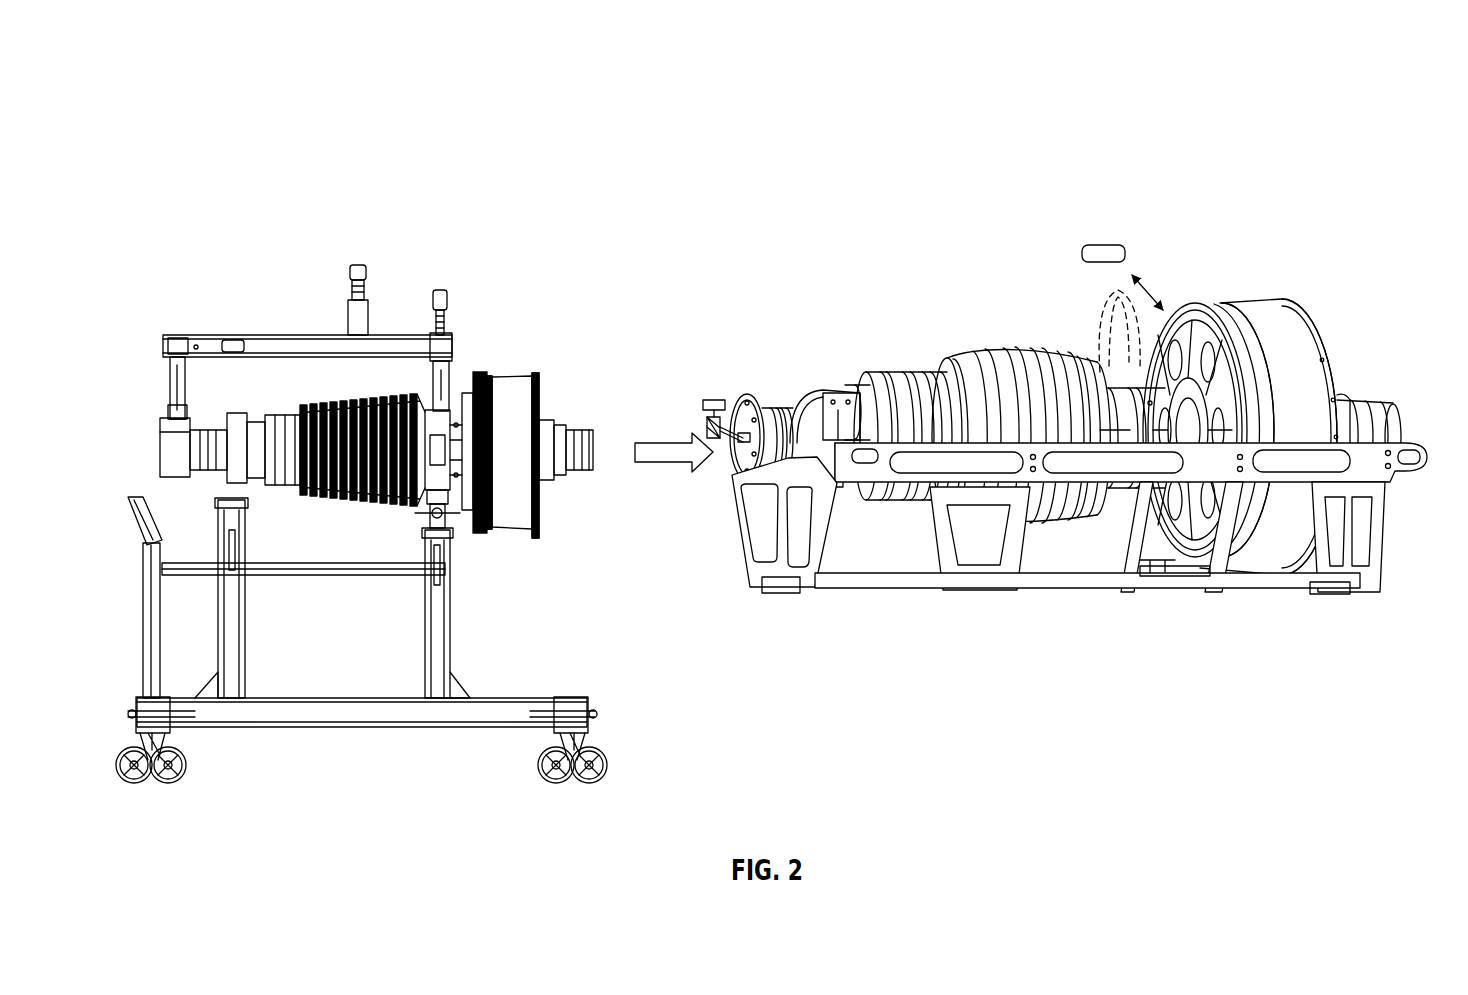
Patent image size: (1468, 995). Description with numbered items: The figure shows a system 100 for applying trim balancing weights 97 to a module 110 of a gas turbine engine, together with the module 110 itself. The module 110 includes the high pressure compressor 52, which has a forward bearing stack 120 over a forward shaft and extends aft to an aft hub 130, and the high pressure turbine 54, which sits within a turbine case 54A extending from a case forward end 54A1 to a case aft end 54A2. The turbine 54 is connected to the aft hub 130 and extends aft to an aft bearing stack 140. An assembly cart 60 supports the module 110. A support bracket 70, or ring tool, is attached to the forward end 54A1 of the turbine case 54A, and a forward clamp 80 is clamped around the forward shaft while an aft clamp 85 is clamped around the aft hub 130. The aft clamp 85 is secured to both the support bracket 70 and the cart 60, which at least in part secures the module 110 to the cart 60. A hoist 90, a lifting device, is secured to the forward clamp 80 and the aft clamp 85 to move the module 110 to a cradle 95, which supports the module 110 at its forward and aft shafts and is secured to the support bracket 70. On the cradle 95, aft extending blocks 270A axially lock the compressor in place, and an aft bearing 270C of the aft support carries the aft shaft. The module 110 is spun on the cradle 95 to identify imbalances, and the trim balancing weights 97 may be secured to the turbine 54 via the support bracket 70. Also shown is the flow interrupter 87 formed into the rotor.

The high pressure compressor 52 is at (355, 505).
The high pressure turbine 54 is at (553, 497).
The turbine case 54A is at (512, 374).
The case forward end 54A1 is at (490, 374).
The case aft end 54A2 is at (536, 372).
The assembly cart 60 is at (448, 605).
The support bracket 70 is at (478, 370).
The forward clamp 80 is at (158, 437).
The aft clamp 85 is at (428, 407).
The flow interrupter 87 is at (1120, 434).
The hoist 90 is at (215, 328).
The cradle 95 is at (855, 593).
The trim balancing weights 97 is at (1080, 253).
The system 100 is at (1300, 150).
The module 110 is at (316, 390).
The forward bearing stack 120 is at (193, 480).
The aft hub 130 is at (418, 492).
The aft bearing stack 140 is at (598, 480).
The aft extending blocks 270A is at (740, 390).
The aft bearing 270C is at (1372, 404).